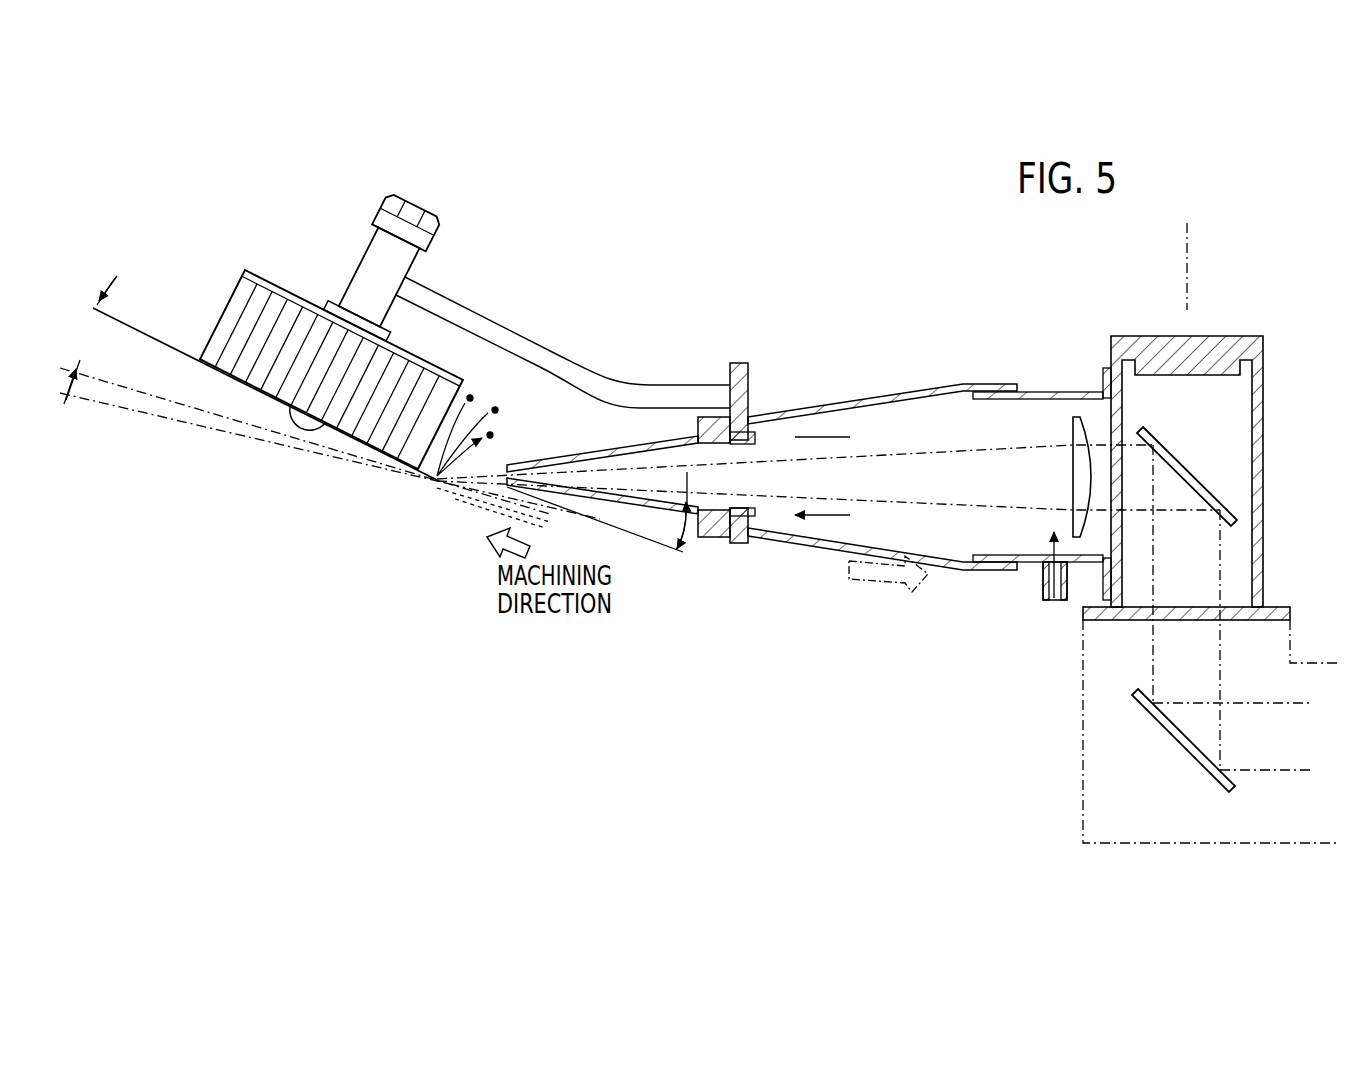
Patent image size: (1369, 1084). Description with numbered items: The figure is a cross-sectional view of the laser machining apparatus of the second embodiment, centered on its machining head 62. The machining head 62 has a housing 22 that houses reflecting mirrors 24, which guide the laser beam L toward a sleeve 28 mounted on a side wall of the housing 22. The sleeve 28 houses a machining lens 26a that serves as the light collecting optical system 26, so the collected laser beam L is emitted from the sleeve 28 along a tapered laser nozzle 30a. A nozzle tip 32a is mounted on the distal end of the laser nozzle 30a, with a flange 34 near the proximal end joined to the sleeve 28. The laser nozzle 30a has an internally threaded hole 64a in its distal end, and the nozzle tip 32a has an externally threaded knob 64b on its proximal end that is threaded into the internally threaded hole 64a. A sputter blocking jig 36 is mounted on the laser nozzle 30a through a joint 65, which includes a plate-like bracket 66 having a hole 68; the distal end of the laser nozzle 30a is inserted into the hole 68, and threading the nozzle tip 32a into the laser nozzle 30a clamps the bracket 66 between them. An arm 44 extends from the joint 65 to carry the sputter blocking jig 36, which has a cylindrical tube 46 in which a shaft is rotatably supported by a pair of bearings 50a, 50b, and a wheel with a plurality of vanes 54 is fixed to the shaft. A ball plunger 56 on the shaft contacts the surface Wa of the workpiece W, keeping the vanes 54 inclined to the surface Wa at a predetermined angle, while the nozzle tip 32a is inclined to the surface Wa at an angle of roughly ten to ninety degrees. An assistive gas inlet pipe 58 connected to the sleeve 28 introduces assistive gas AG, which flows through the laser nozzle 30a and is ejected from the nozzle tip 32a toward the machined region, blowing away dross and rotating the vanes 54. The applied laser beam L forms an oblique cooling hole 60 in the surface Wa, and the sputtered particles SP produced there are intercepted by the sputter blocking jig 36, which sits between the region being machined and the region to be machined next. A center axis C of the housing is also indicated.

The housing 22 is at (1228, 350).
The reflecting mirror 24 is at (1228, 500).
The light collecting optical system 26 is at (1222, 433).
The machining lens 26a is at (1073, 435).
The sleeve 28 is at (1062, 392).
The laser nozzle 30a is at (920, 386).
The nozzle tip 32a is at (597, 452).
The flange 34 is at (700, 430).
The sputter blocking jig 36 is at (230, 390).
The arm 44 is at (635, 383).
The cylindrical tube 46 is at (360, 259).
The bearing 50a is at (418, 247).
The bearing 50b is at (376, 322).
The vanes 54 is at (250, 302).
The ball plunger 56 is at (305, 432).
The assistive gas inlet pipe 58 is at (1040, 598).
The cooling hole 60 is at (391, 486).
The machining head 62 is at (1012, 256).
The internally threaded hole 64a is at (742, 446).
The externally threaded knob 64b is at (748, 540).
The joint 65 is at (508, 329).
The plate-like bracket 66 is at (738, 363).
The hole 68 is at (737, 510).
The workpiece W is at (133, 381).
The surface Wa is at (178, 397).
The sputtered particles SP is at (497, 408).
The laser beam L is at (905, 503).
The assistive gas AG is at (1050, 540).
The center axis C is at (1184, 240).